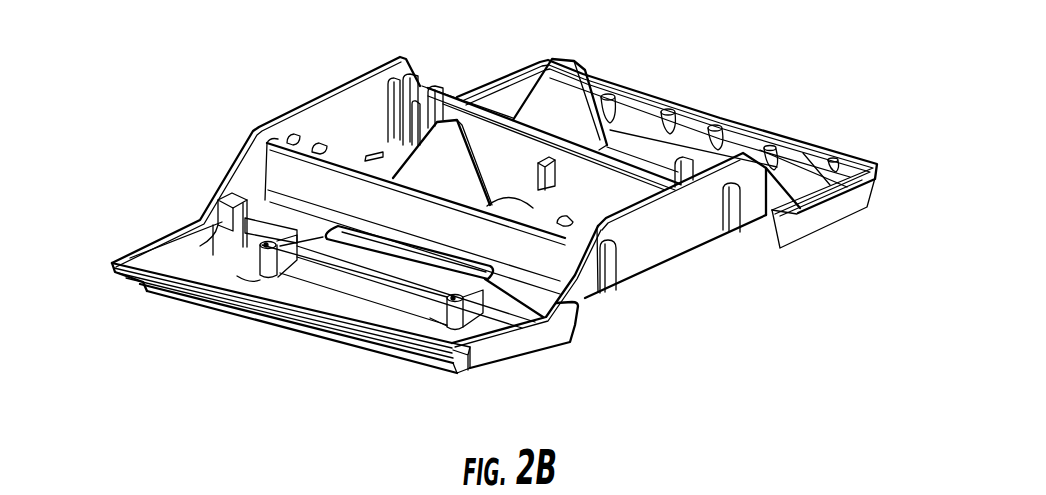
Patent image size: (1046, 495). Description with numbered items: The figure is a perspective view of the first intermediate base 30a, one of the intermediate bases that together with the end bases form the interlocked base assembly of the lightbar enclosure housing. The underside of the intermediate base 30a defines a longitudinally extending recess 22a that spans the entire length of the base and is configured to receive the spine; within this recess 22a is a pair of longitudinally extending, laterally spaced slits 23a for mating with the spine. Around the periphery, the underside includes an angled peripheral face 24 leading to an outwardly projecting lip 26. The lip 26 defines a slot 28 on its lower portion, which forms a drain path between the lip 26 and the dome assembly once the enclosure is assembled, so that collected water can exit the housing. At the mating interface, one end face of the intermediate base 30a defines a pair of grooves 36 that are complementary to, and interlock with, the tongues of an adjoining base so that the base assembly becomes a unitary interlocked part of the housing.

The longitudinally extending recess 22a is at (645, 280).
The slits 23a is at (603, 297).
The angled peripheral face 24 is at (463, 376).
The outwardly projecting lip 26 is at (111, 265).
The slot 28 is at (287, 323).
The first intermediate base 30a is at (897, 106).
The grooves 36 is at (540, 342).